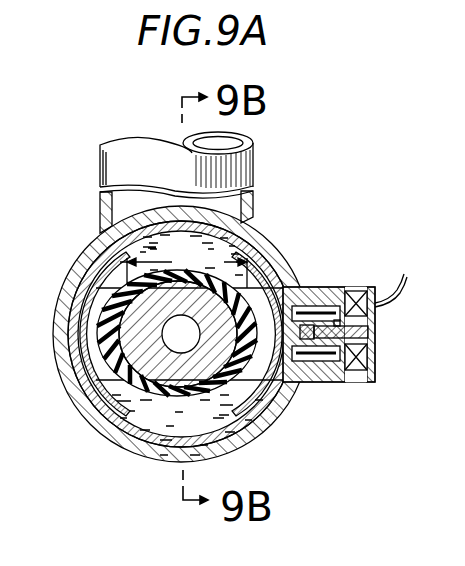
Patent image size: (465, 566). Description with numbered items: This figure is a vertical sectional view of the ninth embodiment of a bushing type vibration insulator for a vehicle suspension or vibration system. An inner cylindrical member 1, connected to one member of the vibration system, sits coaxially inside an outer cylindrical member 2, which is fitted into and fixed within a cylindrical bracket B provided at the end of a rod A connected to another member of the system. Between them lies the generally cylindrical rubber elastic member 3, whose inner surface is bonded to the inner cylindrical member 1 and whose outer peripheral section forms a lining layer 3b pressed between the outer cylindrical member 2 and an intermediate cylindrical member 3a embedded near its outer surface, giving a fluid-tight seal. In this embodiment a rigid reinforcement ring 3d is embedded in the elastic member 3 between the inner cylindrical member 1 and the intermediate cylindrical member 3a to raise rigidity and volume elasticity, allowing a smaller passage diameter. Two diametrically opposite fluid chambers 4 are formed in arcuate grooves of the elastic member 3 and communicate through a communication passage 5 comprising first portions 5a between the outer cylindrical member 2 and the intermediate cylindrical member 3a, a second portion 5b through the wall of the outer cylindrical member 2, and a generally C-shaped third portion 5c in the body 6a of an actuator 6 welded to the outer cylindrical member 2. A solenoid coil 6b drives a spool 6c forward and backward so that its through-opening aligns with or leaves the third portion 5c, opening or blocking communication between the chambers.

The inner cylindrical member 1 is at (113, 427).
The outer cylindrical member 2 is at (148, 440).
The elastic member 3 is at (232, 390).
The intermediate cylindrical member 3a is at (88, 305).
The elastic member lining layer 3b is at (82, 326).
The reinforcement ring 3d is at (113, 280).
The fluid chamber 4 is at (187, 345).
The communication passage 5 is at (315, 302).
The first portion 5a is at (293, 283).
The second portion 5b is at (293, 303).
The third portion 5c is at (338, 376).
The actuator 6 is at (343, 287).
The actuator body 6a is at (358, 289).
The solenoid coil 6b is at (363, 309).
The spool 6c is at (370, 334).
The rod A is at (253, 176).
The cylindrical bracket B is at (269, 417).